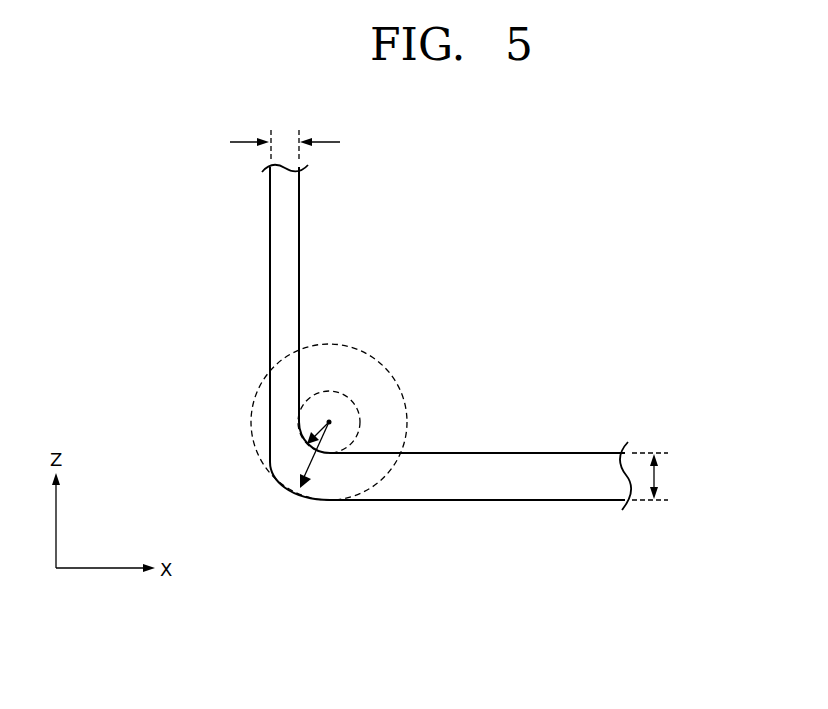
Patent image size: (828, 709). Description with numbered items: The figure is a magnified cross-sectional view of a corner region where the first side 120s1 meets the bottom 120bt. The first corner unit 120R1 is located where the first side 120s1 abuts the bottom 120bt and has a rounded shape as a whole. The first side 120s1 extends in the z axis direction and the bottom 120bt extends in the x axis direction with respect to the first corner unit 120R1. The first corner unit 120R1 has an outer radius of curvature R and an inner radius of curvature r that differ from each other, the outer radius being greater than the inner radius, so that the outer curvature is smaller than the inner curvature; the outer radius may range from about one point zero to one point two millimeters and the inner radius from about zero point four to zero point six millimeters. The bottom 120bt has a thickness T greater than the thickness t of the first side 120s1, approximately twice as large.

The first side 120s1 is at (282, 271).
The bottom 120bt is at (470, 490).
The first corner unit 120R1 is at (309, 500).